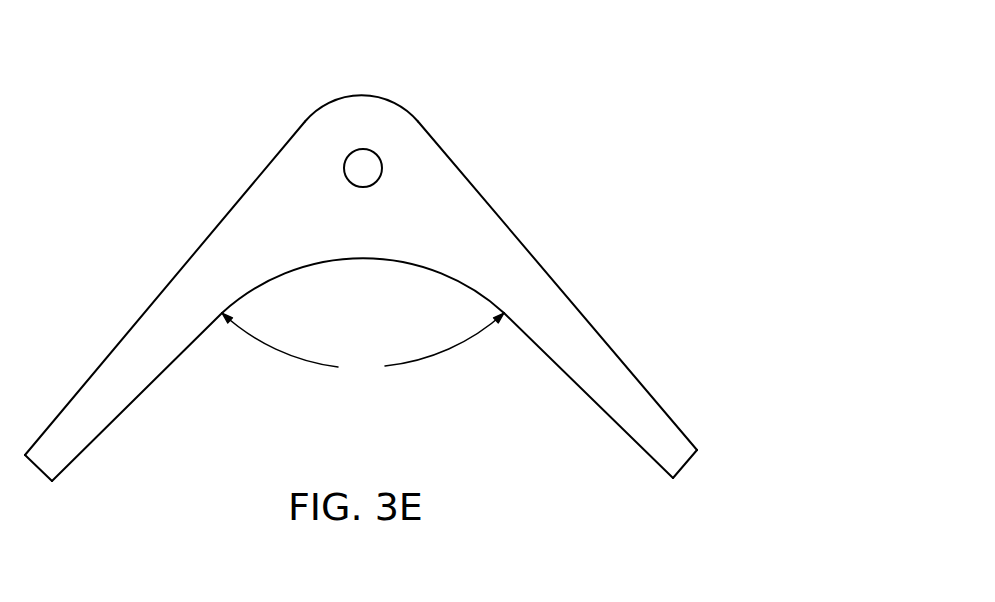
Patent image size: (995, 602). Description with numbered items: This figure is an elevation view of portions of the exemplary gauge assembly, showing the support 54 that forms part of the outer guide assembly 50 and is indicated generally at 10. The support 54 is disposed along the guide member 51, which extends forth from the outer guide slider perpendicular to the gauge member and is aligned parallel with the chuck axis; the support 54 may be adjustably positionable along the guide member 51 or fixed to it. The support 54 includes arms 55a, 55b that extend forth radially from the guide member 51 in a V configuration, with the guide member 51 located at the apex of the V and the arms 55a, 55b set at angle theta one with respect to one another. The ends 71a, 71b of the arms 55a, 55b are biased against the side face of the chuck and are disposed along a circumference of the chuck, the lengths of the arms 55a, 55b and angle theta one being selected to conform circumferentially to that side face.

The chevron-shaped bracket 10 is at (705, 47).
The outer guide assembly 50 is at (443, 163).
The guide member 51 is at (357, 167).
The support 54 is at (517, 263).
The arm 55a is at (153, 322).
The arm 55b is at (610, 347).
The end 71a is at (38, 468).
The end 71b is at (685, 465).